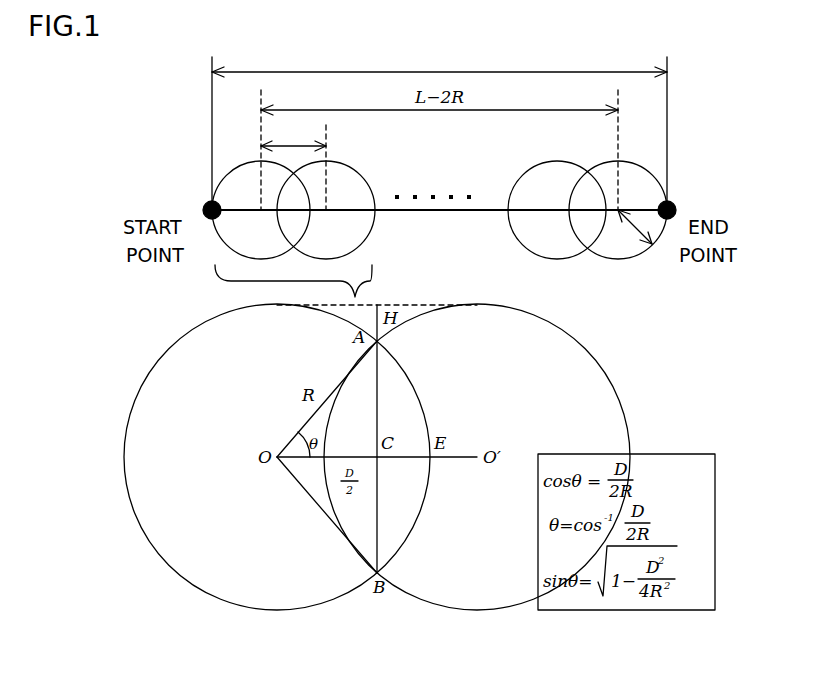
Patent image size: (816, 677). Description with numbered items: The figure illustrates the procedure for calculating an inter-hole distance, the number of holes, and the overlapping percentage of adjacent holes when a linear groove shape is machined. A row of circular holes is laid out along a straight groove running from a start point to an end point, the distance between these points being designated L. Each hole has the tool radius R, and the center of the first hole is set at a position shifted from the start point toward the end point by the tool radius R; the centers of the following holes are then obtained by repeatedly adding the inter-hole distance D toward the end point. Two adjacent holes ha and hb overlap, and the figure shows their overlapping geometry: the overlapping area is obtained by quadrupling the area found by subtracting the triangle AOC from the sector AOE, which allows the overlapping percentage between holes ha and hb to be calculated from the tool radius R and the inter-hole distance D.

The hole ha is at (222, 182).
The hole hb is at (355, 170).
The distance from start point to end point L is at (439, 62).
The inter-hole distance D is at (293, 137).
The tool radius R is at (635, 228).